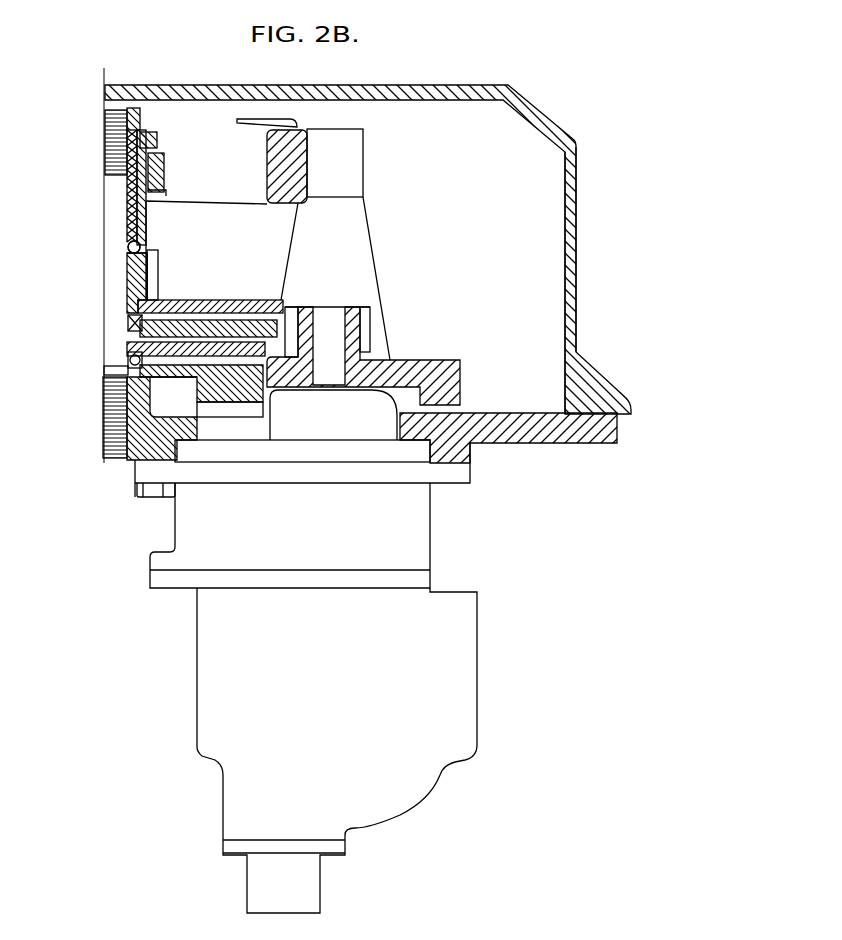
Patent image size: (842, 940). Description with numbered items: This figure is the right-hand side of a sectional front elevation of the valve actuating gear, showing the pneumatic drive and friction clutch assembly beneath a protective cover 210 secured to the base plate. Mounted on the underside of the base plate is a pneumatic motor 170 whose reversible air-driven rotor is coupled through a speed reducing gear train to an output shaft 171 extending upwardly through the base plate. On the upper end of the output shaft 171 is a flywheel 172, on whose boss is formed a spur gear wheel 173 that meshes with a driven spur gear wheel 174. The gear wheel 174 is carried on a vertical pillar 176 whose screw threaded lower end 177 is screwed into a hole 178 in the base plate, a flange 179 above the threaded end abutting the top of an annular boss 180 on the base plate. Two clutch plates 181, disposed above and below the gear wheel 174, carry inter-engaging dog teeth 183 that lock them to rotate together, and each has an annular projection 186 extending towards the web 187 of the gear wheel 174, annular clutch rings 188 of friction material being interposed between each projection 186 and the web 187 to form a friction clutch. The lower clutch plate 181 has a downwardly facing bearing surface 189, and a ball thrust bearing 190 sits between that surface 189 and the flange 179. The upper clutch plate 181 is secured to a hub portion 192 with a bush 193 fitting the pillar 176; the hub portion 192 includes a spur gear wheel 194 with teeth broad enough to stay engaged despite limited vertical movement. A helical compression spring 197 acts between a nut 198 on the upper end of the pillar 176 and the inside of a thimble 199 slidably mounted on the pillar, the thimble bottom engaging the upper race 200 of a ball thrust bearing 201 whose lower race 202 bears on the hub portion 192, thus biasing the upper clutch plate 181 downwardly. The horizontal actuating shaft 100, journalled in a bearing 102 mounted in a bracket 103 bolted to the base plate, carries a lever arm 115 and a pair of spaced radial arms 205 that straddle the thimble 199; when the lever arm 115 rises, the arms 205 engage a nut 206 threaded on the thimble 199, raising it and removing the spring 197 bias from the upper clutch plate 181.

The actuating shaft 100 is at (168, 138).
The bearing 102 is at (347, 152).
The bracket 103 is at (352, 217).
The lever arm 115 is at (288, 135).
The pneumatic motor 170 is at (455, 690).
The output shaft 171 is at (327, 327).
The flywheel 172 is at (445, 390).
The spur gear wheel 173 is at (367, 335).
The driven spur gear wheel 174 is at (297, 308).
The pillar 176 is at (112, 265).
The screw threaded lower end 177 is at (113, 450).
The hole 178 is at (127, 433).
The flange 179 is at (107, 403).
The annular boss 180 is at (142, 396).
The clutch plates 181 is at (248, 291).
The dog teeth 183 is at (128, 336).
The annular projection 186 is at (298, 393).
The web 187 is at (195, 352).
The annular clutch rings 188 is at (250, 352).
The bearing surface 189 is at (128, 357).
The ball thrust bearing 190 is at (115, 369).
The hub portion 192 is at (150, 268).
The bush 193 is at (128, 295).
The spur gear wheel 194 is at (205, 270).
The helical compression spring 197 is at (147, 193).
The nut 198 is at (133, 118).
The thimble 199 is at (145, 203).
The upper race 200 is at (142, 240).
The ball thrust bearing 201 is at (141, 247).
The lower race 202 is at (143, 258).
The radial arms 205 is at (163, 187).
The nut 206 is at (152, 130).
The cover 210 is at (547, 115).